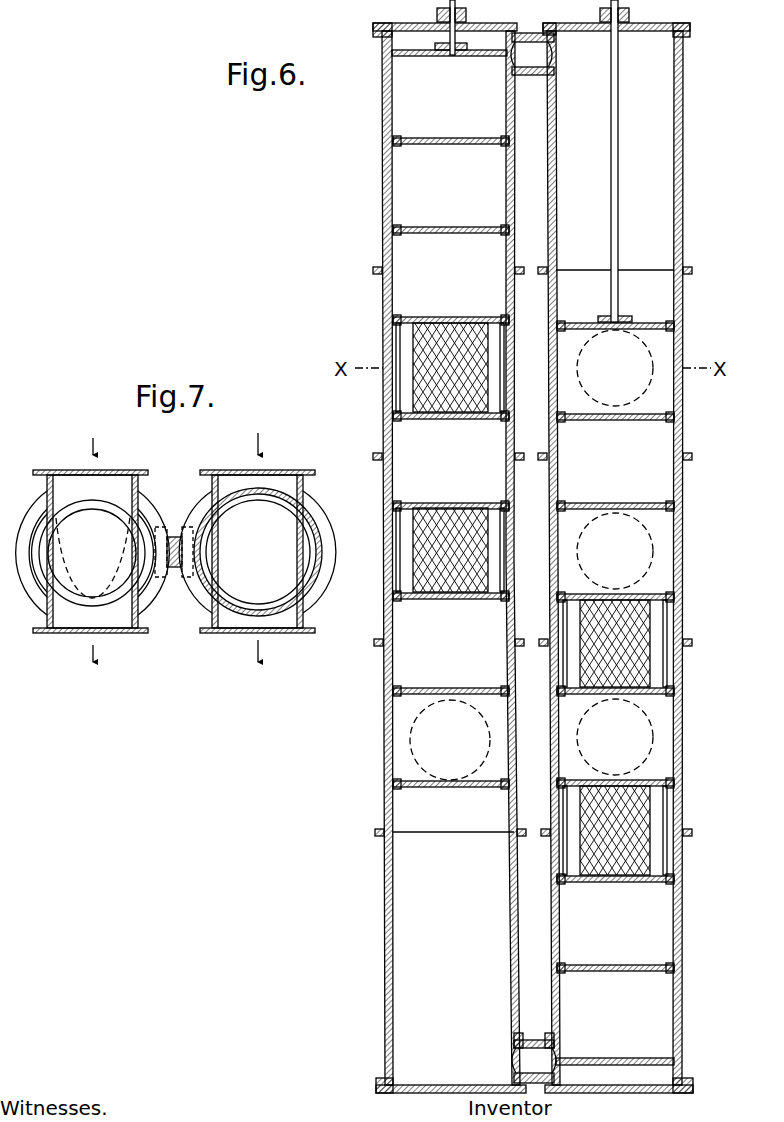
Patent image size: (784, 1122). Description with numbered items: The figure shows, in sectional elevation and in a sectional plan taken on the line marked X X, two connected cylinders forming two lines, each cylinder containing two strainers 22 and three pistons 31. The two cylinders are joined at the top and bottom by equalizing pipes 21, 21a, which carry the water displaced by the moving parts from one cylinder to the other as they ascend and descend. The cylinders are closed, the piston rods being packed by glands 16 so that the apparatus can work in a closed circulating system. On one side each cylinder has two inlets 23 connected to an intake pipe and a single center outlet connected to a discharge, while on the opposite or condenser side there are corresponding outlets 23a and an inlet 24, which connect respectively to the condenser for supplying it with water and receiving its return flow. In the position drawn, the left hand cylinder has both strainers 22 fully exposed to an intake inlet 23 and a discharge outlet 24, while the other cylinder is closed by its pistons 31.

In FIG. 6, the gland 16 is at (458, 17).
In FIG. 6, the equalizing pipe 21 is at (550, 53).
In FIG. 6, the equalizing pipe 21a is at (512, 1060).
In FIG. 6, the strainer 22 is at (425, 355).
In FIG. 7, the strainer 22 is at (172, 535).
In FIG. 6, the inlet 23 is at (450, 740).
In FIG. 7, the inlet 23 is at (228, 474).
In FIG. 6, the outlet 23a is at (615, 552).
In FIG. 7, the outlet 23a is at (232, 632).
In FIG. 6, the inlet 24 is at (615, 551).
In FIG. 6, the piston 31 is at (530, 540).
In FIG. 7, the piston 31 is at (257, 551).